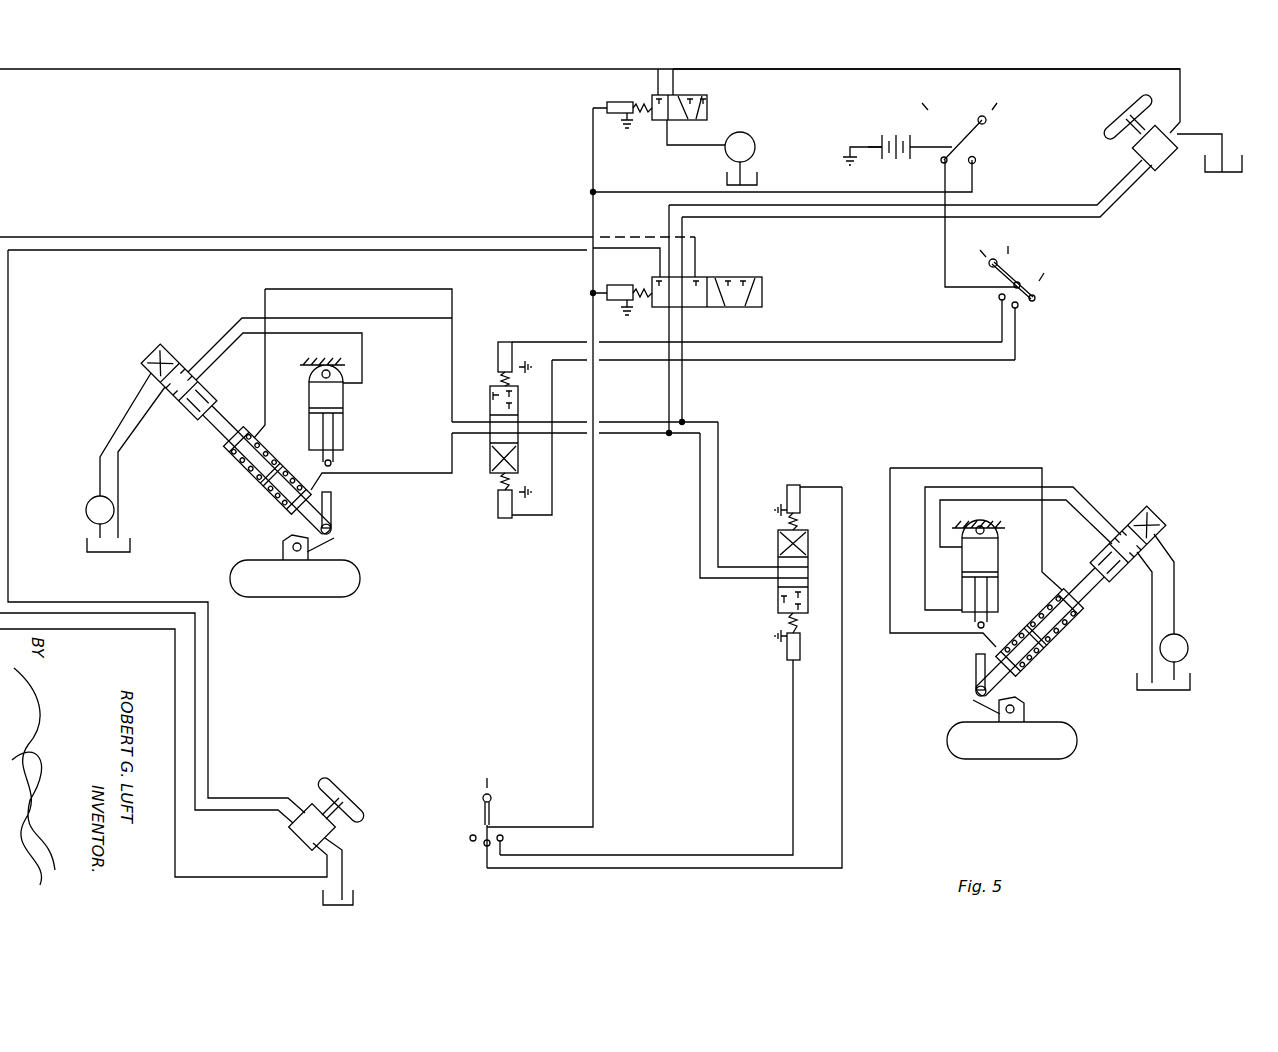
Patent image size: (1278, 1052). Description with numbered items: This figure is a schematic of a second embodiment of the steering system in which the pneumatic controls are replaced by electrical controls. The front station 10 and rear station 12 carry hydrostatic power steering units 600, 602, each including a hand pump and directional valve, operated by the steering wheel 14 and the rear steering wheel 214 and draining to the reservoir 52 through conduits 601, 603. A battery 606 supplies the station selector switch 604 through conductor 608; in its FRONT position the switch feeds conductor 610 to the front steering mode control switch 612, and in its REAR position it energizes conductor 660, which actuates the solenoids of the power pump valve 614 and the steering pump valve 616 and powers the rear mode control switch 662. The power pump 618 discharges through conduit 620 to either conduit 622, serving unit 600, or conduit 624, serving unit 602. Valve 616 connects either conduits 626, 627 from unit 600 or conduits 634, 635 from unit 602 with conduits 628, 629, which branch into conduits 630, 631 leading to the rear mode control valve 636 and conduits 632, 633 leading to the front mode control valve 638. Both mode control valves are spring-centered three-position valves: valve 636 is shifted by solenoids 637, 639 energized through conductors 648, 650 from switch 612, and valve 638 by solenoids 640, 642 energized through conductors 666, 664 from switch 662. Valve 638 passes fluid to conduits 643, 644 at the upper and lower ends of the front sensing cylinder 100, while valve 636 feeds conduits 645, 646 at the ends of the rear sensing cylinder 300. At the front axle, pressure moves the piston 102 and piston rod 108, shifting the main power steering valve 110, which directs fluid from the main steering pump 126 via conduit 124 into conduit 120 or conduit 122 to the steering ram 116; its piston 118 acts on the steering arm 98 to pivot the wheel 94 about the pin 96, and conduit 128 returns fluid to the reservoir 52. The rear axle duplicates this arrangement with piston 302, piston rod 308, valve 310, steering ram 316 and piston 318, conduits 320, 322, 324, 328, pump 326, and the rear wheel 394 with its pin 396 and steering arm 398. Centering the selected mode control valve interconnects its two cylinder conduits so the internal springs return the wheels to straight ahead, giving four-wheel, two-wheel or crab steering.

The front station 10 is at (1166, 177).
The rear station 12 is at (336, 833).
The steering wheel 14 is at (1121, 105).
The reservoir 52 is at (760, 175).
The steerable wheel 94 is at (1078, 750).
The pin 96 is at (1030, 712).
The steering arm 98 is at (1010, 693).
The sensing cylinder 100 is at (1078, 638).
The piston 102 is at (1060, 650).
The piston rod 108 is at (1086, 580).
The main power steering valve 110 is at (1152, 512).
The steering ram 116 is at (1000, 592).
The piston 118 is at (1000, 569).
The conduit 120 is at (1078, 488).
The conduit 122 is at (1062, 504).
The conduit 124 is at (1178, 586).
The main steering pump 126 is at (1190, 644).
The conduit 128 is at (1150, 605).
The rear steering wheel 214 is at (347, 780).
The sensing cylinder 300 is at (233, 477).
The piston 302 is at (272, 490).
The piston rod 308 is at (207, 430).
The main power steering valve 310 is at (160, 352).
The steering ram 316 is at (336, 459).
The piston 318 is at (345, 417).
The conduit 320 is at (226, 318).
The conduit 322 is at (232, 352).
The conduit 324 is at (128, 412).
The main steering pump 326 is at (86, 510).
The conduit 328 is at (120, 490).
The rear wheel 394 is at (362, 570).
The bracket 396 is at (312, 550).
The steering link 398 is at (318, 530).
The hydrostatic power steering unit 600 is at (1133, 150).
The conduit 601 is at (1198, 136).
The hydrostatic power steering unit 602 is at (300, 840).
The conduit 603 is at (350, 850).
The station selector switch 604 is at (990, 126).
The battery 606 is at (886, 164).
The conductor 608 is at (868, 140).
The conductor 610 is at (943, 176).
The front steering mode control switch 612 is at (1035, 283).
The power pump valve 614 is at (706, 93).
The steering pump valve 616 is at (745, 278).
The power pump 618 is at (746, 134).
The conduit 620 is at (686, 147).
The conduit 622 is at (832, 72).
The conduit 624 is at (306, 72).
The conduit 626 is at (1050, 205).
The conduit 627 is at (1112, 208).
The conduit 628 is at (667, 375).
The conduit 629 is at (684, 384).
The conduit 630 is at (622, 436).
The conduit 631 is at (648, 402).
The conduit 632 is at (698, 536).
The conduit 633 is at (716, 518).
The conduit 634 is at (142, 236).
The conduit 635 is at (178, 252).
The rear mode control valve 636 is at (486, 390).
The solenoid 637 is at (503, 520).
The front mode control valve 638 is at (812, 618).
The solenoid 639 is at (512, 330).
The solenoid 640 is at (785, 655).
The solenoid 642 is at (800, 485).
The conduit 643 is at (950, 467).
The conduit 644 is at (918, 638).
The conduit 645 is at (385, 290).
The conduit 646 is at (450, 480).
The conductor 648 is at (925, 362).
The conductor 650 is at (895, 342).
The conductor 660 is at (593, 148).
The rear mode control switch 662 is at (470, 818).
The conductor 664 is at (845, 712).
The conductor 666 is at (790, 708).